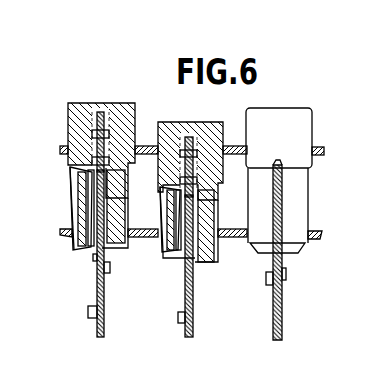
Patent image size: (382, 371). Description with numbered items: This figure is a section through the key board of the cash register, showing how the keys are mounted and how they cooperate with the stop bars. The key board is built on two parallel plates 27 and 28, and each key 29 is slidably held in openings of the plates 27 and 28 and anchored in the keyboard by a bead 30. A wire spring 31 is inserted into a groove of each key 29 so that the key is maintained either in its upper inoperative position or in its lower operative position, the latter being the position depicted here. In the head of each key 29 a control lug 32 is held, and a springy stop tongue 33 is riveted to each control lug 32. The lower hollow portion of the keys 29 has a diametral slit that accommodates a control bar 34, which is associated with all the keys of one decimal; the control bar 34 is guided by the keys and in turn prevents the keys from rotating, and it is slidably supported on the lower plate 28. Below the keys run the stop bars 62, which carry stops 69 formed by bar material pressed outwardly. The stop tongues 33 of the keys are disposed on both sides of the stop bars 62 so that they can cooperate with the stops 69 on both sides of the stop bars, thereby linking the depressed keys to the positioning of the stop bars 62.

The upper plate 27 is at (229, 146).
The lower plate 28 is at (312, 245).
The key 29 is at (135, 118).
The bead 30 is at (216, 255).
The wire spring 31 is at (72, 212).
The control lug 32 is at (103, 112).
The stop tongue 33 is at (95, 257).
The control bar 34 is at (101, 214).
The stop bar 62 is at (104, 300).
The stop 69 is at (110, 270).